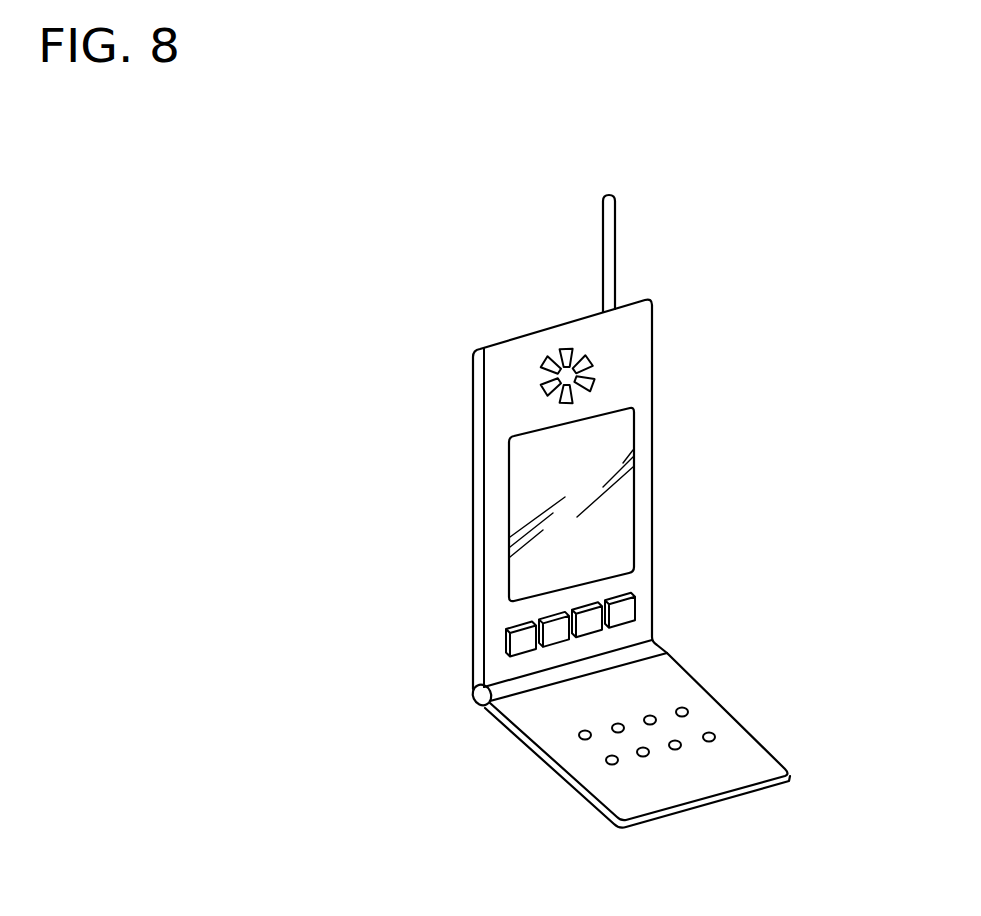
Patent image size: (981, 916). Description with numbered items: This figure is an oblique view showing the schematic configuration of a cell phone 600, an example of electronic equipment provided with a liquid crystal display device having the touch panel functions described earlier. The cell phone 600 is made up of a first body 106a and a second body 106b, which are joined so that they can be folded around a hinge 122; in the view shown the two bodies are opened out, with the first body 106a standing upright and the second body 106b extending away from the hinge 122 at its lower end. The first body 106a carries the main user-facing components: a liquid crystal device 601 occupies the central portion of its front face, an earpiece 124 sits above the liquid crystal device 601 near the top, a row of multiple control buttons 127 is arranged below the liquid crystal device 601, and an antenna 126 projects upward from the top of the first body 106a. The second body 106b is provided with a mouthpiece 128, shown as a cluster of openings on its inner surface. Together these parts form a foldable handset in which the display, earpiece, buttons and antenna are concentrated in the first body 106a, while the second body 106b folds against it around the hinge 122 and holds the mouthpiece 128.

The cell phone 600 is at (757, 421).
The first body 106a is at (453, 555).
The second body 106b is at (553, 803).
The antenna 126 is at (615, 233).
The earpiece 124 is at (540, 388).
The liquid crystal device 601 is at (627, 520).
The control buttons 127 is at (632, 618).
The hinge 122 is at (473, 695).
The mouthpiece 128 is at (710, 732).